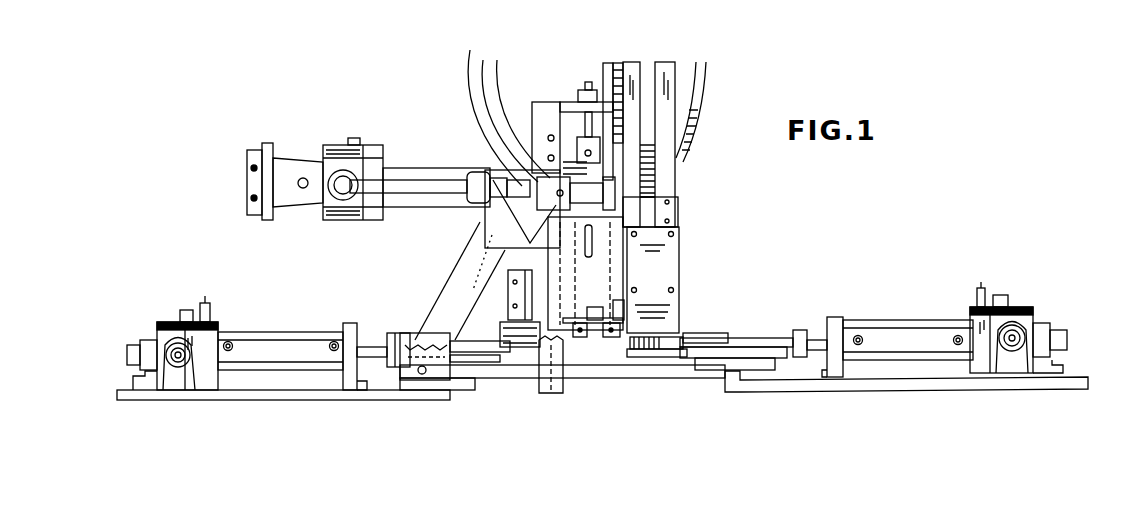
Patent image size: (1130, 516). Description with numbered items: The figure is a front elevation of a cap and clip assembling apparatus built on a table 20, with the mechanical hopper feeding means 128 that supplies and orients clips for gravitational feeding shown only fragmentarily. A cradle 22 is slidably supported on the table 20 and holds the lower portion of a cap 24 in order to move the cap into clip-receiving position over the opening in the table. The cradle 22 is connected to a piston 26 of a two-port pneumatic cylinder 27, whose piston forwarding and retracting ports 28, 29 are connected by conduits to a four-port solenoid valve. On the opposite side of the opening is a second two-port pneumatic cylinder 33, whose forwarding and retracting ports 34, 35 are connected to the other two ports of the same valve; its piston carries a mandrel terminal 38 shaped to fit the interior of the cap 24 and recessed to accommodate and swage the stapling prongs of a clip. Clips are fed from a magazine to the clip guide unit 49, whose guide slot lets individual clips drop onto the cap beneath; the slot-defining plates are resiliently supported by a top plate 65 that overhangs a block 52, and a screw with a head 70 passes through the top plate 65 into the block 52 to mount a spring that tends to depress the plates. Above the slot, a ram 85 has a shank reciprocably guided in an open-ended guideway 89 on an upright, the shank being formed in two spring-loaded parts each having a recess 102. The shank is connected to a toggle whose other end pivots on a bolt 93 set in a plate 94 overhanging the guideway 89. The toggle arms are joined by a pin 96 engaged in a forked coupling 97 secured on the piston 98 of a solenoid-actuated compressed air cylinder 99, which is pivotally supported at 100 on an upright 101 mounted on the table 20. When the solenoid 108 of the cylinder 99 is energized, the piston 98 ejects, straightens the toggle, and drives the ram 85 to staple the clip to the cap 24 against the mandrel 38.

The table 20 is at (683, 372).
The cradle 22 is at (720, 340).
The cap 24 is at (752, 351).
The piston 26 is at (815, 341).
The pneumatic cylinder 27 is at (862, 328).
The piston forwarding port 28 is at (958, 329).
The piston retracting port 29 is at (860, 336).
The second pneumatic cylinder 33 is at (298, 334).
The piston forwarding port 34 is at (230, 341).
The piston retracting port 35 is at (336, 341).
The mandrel terminal 38 is at (497, 353).
The clip guide unit 49 is at (567, 363).
The block 52 is at (617, 338).
The top plate 65 is at (672, 316).
The head 70 is at (622, 308).
The ram 85 is at (606, 301).
The guideway 89 is at (603, 270).
The bolt 93 is at (597, 89).
The plate 94 is at (560, 113).
The pin 96 is at (520, 285).
The forked coupling 97 is at (560, 178).
The piston 98 is at (485, 153).
The compressed air cylinder 99 is at (412, 170).
The pivotal support 100 is at (303, 180).
The upright 101 is at (265, 150).
The recess 102 is at (552, 116).
The solenoid 108 is at (340, 150).
The hopper feeding means 128 is at (702, 96).